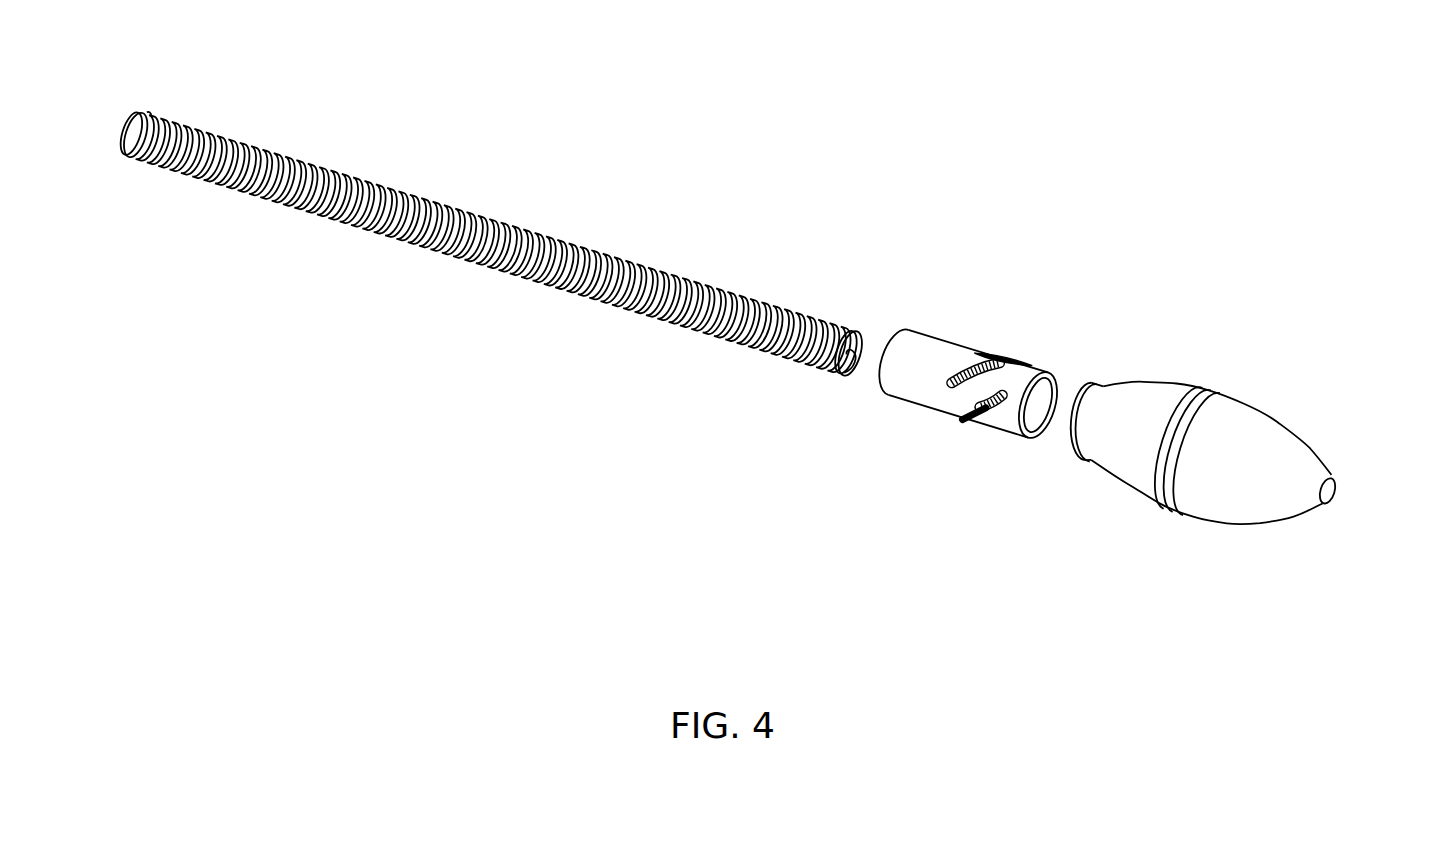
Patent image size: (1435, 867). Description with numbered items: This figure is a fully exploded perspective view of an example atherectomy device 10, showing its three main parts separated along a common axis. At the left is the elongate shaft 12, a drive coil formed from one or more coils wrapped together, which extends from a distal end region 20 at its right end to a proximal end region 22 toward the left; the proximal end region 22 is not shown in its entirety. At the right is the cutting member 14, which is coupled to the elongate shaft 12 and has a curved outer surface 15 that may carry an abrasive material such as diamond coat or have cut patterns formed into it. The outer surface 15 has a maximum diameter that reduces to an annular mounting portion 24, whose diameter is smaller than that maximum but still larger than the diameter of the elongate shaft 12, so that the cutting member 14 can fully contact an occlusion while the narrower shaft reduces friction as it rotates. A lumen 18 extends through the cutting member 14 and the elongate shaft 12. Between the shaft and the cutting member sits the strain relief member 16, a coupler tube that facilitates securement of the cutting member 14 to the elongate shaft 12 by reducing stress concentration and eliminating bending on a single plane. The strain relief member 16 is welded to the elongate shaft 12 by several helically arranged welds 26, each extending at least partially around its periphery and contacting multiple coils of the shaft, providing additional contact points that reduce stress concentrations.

The atherectomy device 10 is at (679, 64).
The elongate shaft 12 is at (527, 187).
The cutting member 14 is at (1273, 366).
The outer surface 15 is at (1285, 432).
The strain relief member 16 is at (930, 345).
The lumen 18 is at (121, 114).
The distal end region 20 is at (827, 424).
The proximal end region 22 is at (162, 189).
The annular mounting portion 24 is at (1105, 385).
The helically arranged welds 26 is at (980, 355).